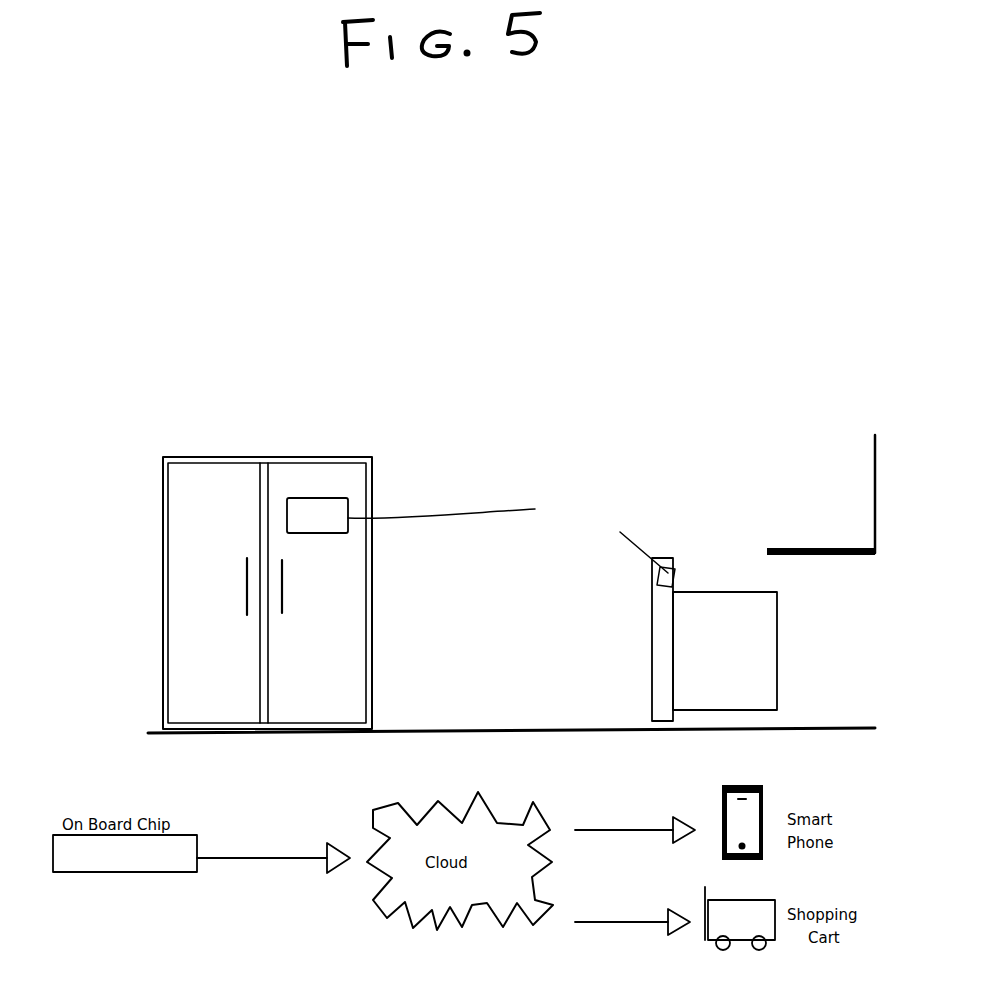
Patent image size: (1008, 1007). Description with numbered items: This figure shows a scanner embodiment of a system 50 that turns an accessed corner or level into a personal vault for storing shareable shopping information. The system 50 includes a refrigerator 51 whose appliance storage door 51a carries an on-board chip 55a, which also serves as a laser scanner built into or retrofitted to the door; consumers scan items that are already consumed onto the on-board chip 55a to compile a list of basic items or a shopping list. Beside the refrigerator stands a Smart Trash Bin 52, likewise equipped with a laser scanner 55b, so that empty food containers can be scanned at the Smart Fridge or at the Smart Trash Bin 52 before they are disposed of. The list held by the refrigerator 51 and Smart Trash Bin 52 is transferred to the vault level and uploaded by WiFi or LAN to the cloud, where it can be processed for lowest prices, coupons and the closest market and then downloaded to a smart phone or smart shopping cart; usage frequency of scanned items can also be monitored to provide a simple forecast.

The system 50 is at (110, 610).
The refrigerator 51 is at (200, 567).
The appliance storage door 51a is at (320, 657).
The on-board chip / laser scanner 55a is at (350, 502).
The laser scanner 55b is at (675, 566).
The Smart Trash Bin 52 is at (723, 590).